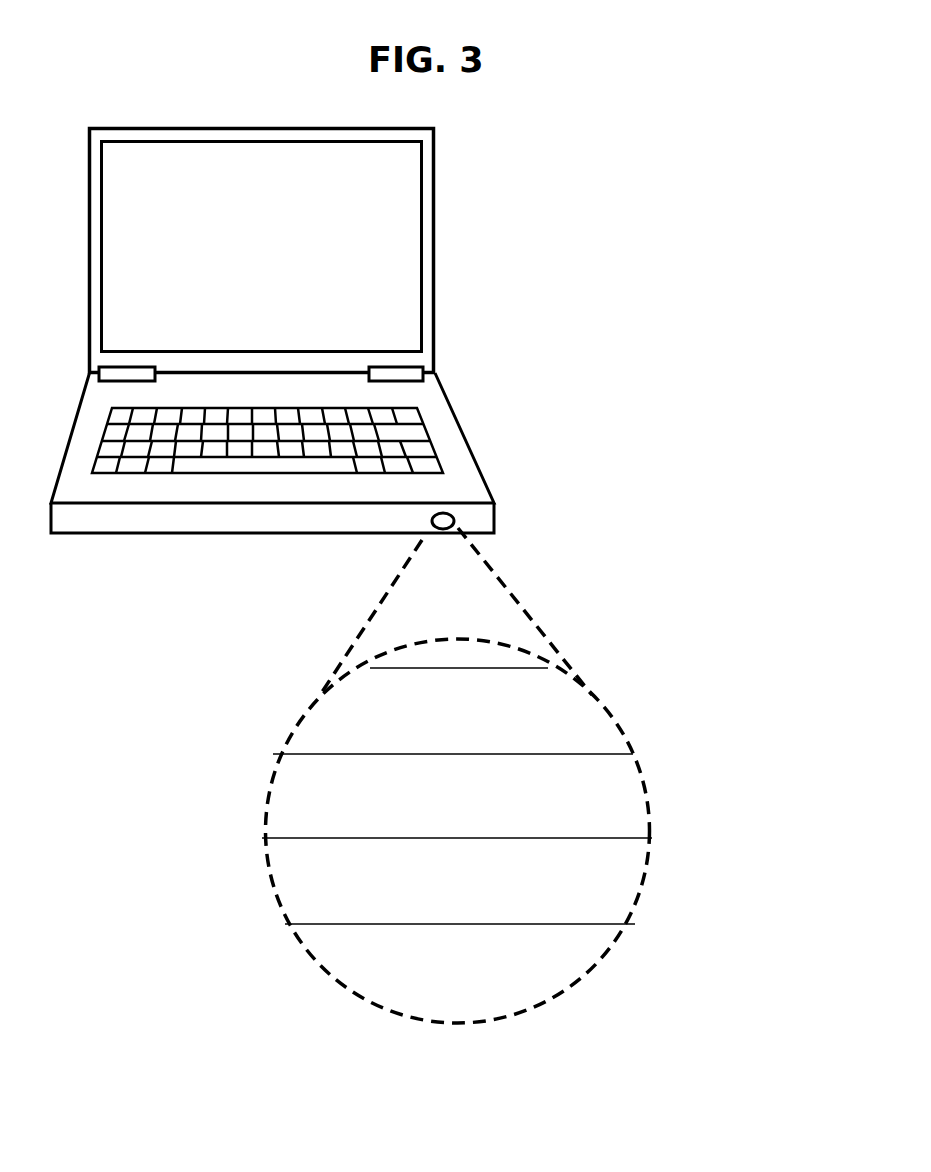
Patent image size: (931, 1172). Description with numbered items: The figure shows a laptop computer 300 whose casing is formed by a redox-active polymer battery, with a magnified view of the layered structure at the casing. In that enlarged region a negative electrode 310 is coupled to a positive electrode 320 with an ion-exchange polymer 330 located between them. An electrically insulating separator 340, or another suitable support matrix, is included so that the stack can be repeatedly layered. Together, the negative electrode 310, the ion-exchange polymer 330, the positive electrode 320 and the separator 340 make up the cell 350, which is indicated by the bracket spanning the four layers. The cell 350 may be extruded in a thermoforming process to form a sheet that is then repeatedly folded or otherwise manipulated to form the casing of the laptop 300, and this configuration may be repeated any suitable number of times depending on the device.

The laptop computer 300 is at (345, 331).
The negative electrode 310 is at (459, 711).
The positive electrode 320 is at (457, 881).
The ion-exchange polymer 330 is at (453, 796).
The electrically insulating separator 340 is at (460, 964).
The cell 350 is at (657, 671).